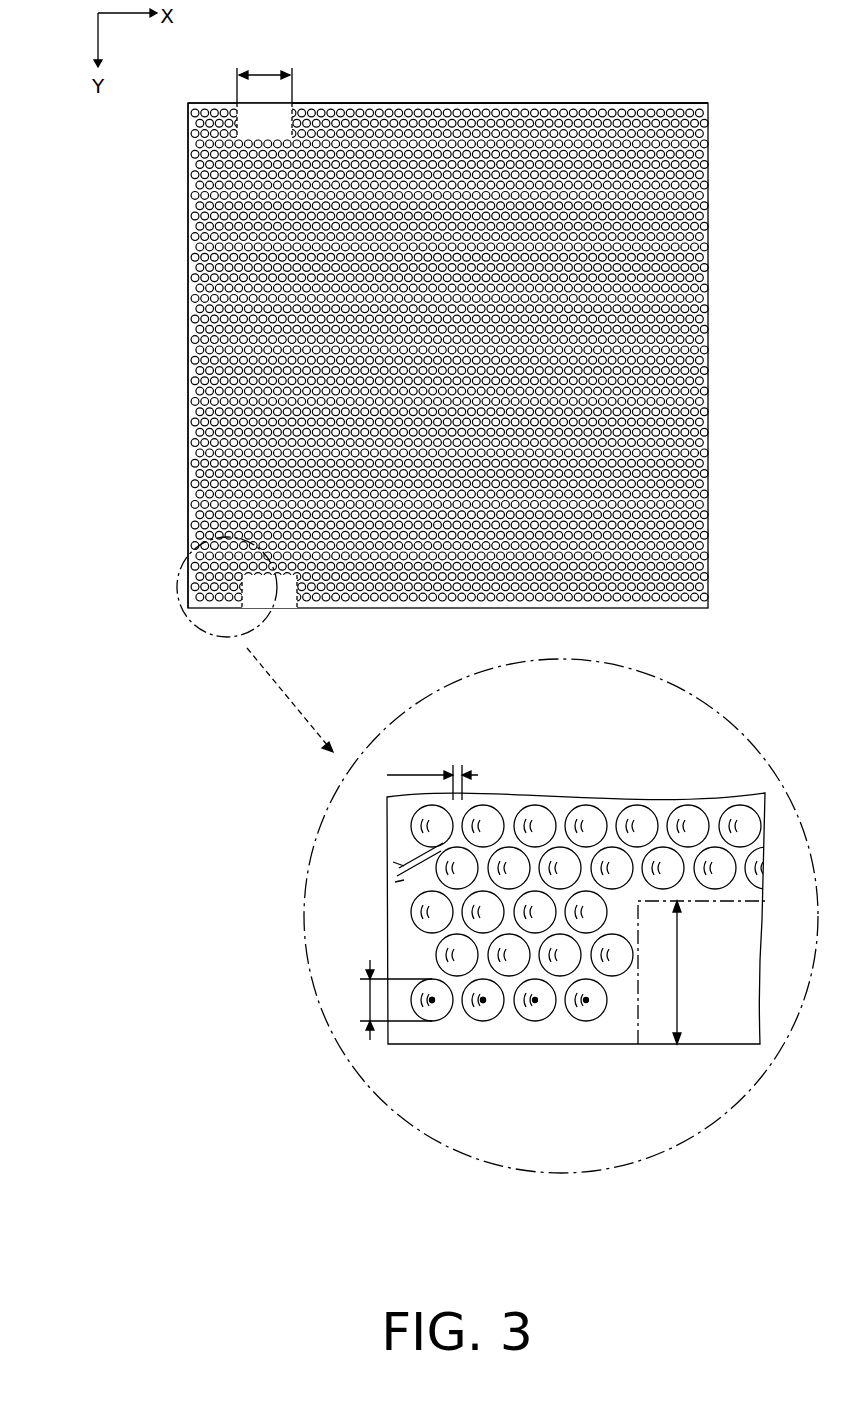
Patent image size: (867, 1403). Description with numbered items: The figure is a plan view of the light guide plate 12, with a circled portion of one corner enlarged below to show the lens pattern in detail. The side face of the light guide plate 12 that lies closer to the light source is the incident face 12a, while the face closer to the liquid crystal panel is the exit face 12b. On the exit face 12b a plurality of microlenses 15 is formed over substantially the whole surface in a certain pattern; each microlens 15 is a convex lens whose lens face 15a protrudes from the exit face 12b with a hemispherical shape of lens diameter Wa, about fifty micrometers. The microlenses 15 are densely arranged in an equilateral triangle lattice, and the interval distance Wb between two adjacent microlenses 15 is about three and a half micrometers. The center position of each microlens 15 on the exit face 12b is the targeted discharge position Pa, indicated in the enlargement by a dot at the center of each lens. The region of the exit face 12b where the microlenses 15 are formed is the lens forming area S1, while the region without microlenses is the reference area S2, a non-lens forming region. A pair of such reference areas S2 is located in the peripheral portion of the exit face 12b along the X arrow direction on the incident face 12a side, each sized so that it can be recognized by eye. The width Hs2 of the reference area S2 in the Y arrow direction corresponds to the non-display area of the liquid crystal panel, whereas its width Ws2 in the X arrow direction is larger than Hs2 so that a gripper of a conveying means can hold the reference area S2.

The light guide plate 12 is at (730, 193).
The incident face 12a is at (188, 410).
The exit face 12b is at (692, 104).
The microlens 15 is at (513, 104).
The lens face 15a is at (535, 1000).
The lens forming area S1 is at (590, 104).
The reference area S2 is at (280, 112).
The targeted discharge position Pa is at (432, 1000).
The lens diameter Wa is at (383, 1000).
The interval distance Wb is at (365, 872).
The width of the reference area in the X arrow direction Ws2 is at (264, 75).
The width of the reference area in the Y arrow direction Hs2 is at (701, 972).